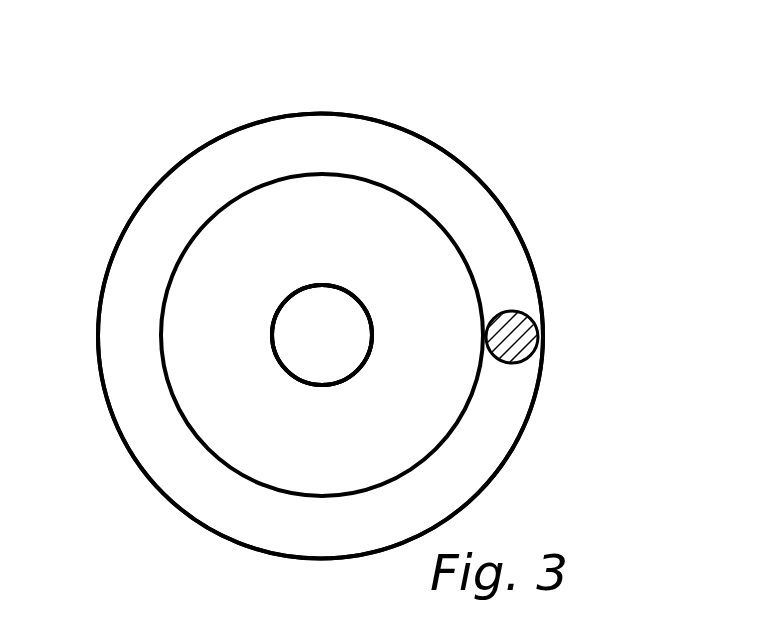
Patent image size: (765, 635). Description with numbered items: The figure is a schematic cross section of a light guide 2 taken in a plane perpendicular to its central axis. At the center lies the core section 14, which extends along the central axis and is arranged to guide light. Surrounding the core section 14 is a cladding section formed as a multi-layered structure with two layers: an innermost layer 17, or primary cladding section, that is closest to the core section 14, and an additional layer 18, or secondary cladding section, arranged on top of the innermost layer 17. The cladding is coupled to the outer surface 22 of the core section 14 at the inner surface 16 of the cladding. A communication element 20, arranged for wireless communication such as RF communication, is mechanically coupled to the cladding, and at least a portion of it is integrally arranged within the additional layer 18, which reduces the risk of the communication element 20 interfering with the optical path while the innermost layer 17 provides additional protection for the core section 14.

The light guide 2 is at (200, 87).
The core section 14 is at (300, 338).
The inner surface of the cladding section 16 is at (355, 372).
The innermost layer 17 is at (415, 222).
The additional layer 18 is at (340, 145).
The communication element 20 is at (538, 332).
The outer surface of the core section 22 is at (305, 286).